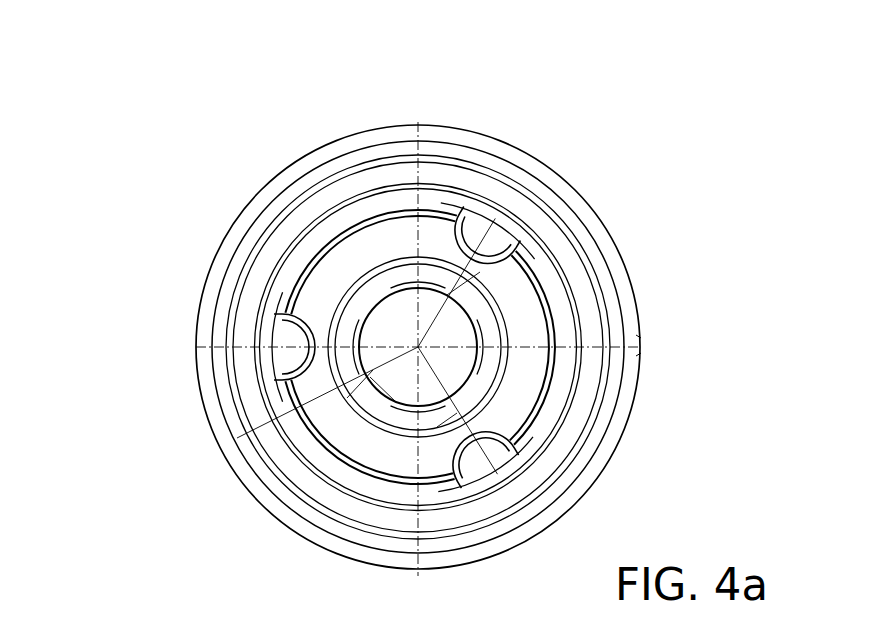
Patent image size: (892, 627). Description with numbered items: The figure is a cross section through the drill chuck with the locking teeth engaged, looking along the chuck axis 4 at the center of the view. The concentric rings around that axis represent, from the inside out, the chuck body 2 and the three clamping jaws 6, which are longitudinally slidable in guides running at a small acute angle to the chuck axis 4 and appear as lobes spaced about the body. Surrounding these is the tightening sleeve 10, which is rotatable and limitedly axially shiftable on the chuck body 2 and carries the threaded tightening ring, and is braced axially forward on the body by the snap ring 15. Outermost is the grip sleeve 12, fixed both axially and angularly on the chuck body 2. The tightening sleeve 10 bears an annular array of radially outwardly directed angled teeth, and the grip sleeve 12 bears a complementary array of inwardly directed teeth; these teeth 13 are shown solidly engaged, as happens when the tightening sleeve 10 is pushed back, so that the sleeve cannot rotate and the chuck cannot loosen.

The chuck body 2 is at (605, 218).
The chuck axis 4 is at (235, 437).
The clamping jaws 6 is at (303, 337).
The tightening sleeve 10 is at (617, 372).
The grip sleeve 12 is at (533, 172).
The locking teeth 13 is at (638, 340).
The snap ring 15 is at (357, 253).